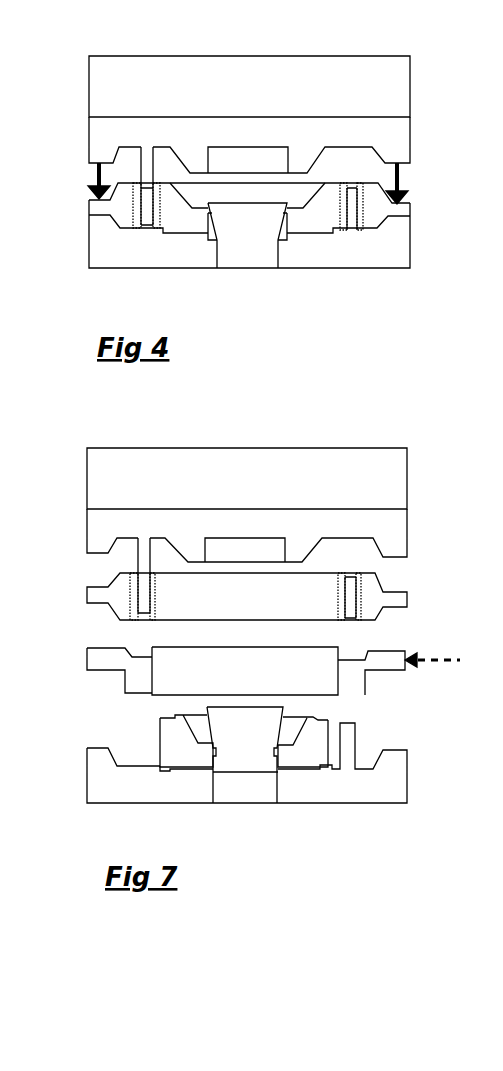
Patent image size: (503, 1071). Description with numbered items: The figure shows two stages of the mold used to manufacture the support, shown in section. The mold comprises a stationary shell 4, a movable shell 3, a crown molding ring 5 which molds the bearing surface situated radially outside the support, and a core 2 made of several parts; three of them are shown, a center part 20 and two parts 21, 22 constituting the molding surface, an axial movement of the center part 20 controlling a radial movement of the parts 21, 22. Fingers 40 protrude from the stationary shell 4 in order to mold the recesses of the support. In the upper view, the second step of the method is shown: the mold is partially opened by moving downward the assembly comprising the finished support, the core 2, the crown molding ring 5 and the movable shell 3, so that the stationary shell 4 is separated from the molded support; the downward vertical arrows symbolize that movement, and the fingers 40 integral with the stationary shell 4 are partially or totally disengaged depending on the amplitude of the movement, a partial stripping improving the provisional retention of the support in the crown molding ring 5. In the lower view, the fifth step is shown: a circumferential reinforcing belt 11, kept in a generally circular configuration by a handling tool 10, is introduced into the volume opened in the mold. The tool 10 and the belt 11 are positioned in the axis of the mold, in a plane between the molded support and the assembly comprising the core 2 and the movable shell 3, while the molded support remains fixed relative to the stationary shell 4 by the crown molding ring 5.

In FIG. 4, the core 2 is at (165, 318).
In FIG. 7, the core 2 is at (160, 845).
In FIG. 4, the movable shell 3 is at (388, 247).
In FIG. 4, the stationary shell 4 is at (97, 138).
In FIG. 4, the crown molding ring 5 is at (394, 207).
In FIG. 7, the crown molding ring 5 is at (247, 534).
In FIG. 7, the handling tool 10 is at (378, 668).
In FIG. 7, the circumferential reinforcing belt 11 is at (340, 648).
In FIG. 4, the center part of the core 20 is at (248, 228).
In FIG. 7, the center part of the core 20 is at (240, 725).
In FIG. 4, the core part 21 is at (193, 218).
In FIG. 7, the core part 21 is at (192, 747).
In FIG. 4, the core part 22 is at (302, 218).
In FIG. 7, the core part 22 is at (303, 747).
In FIG. 4, the fingers 40 is at (137, 178).